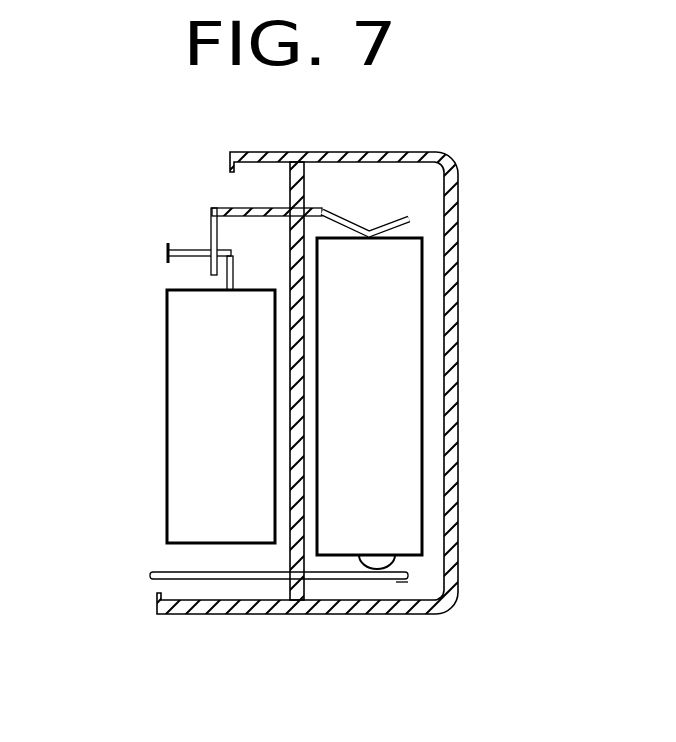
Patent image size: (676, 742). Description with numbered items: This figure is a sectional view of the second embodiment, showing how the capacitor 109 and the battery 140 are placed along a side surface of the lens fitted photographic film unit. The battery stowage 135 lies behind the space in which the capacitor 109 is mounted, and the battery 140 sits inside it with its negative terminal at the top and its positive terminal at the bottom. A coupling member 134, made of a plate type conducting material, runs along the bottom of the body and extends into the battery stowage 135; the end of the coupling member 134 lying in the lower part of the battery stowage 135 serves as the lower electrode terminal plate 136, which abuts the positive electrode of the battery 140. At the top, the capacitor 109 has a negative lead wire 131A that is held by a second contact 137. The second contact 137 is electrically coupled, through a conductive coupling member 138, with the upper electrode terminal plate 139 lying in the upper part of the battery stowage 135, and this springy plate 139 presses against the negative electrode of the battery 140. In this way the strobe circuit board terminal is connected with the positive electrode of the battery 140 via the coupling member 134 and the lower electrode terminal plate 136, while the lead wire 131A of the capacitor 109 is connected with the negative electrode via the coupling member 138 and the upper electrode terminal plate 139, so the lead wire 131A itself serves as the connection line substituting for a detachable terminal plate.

The capacitor 109 is at (243, 419).
The lead wire 131A is at (180, 249).
The coupling member 134 is at (166, 572).
The battery stowage 135 is at (424, 188).
The electrode terminal plate 136 is at (400, 583).
The second contact 137 is at (210, 228).
The conductive coupling member 138 is at (247, 206).
The electrode terminal plate 139 is at (340, 217).
The battery 140 is at (393, 419).